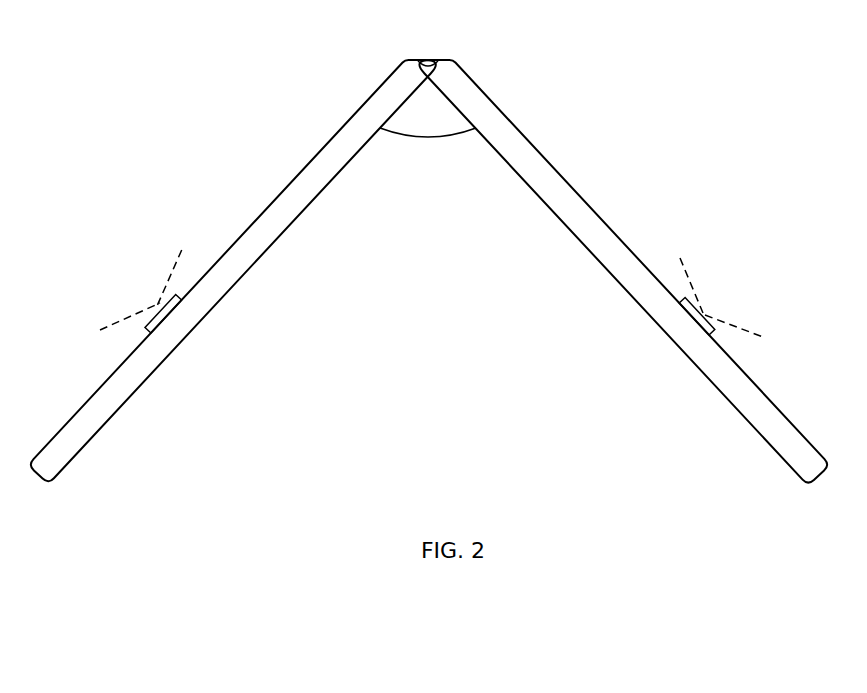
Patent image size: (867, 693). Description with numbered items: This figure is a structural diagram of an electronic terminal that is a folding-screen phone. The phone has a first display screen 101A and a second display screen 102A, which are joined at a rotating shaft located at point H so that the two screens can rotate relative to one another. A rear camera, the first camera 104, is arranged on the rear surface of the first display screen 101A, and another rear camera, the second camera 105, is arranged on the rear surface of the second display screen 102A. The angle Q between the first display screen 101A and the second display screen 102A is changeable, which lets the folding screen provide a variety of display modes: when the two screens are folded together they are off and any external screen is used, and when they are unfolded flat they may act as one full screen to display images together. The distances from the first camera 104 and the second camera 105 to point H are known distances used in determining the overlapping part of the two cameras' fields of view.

The first display screen 101A is at (170, 355).
The second display screen 102A is at (692, 360).
The first camera 104 is at (176, 294).
The second camera 105 is at (685, 298).
The point H is at (428, 50).
The angle Q is at (428, 124).